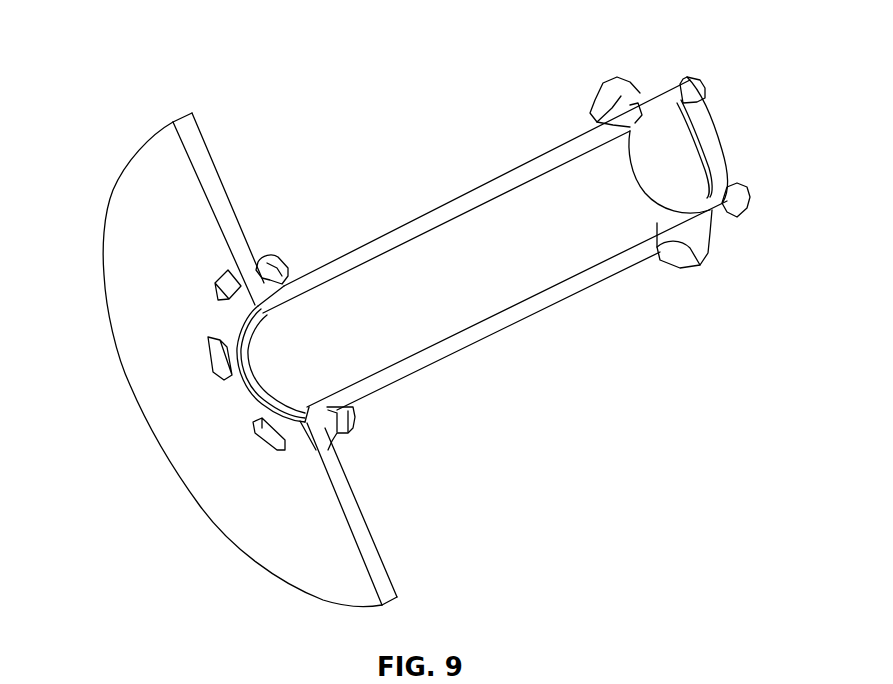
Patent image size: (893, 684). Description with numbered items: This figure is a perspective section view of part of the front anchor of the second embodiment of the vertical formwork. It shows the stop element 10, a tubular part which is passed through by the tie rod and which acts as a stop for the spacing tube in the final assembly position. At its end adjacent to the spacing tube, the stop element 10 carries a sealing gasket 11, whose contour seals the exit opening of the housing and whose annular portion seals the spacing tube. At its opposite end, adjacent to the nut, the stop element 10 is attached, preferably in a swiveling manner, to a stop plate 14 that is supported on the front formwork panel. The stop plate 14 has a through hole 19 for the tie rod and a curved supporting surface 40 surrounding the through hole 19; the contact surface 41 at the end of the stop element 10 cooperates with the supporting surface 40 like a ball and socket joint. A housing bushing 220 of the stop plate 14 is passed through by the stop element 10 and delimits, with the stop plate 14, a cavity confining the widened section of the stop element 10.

The stop element 10 is at (432, 347).
The sealing gasket 11 is at (658, 93).
The stop plate 14 is at (155, 187).
The through hole 19 is at (285, 363).
The supporting surface 40 is at (321, 419).
The contact surface 41 is at (265, 294).
The housing bushing 220 is at (353, 422).